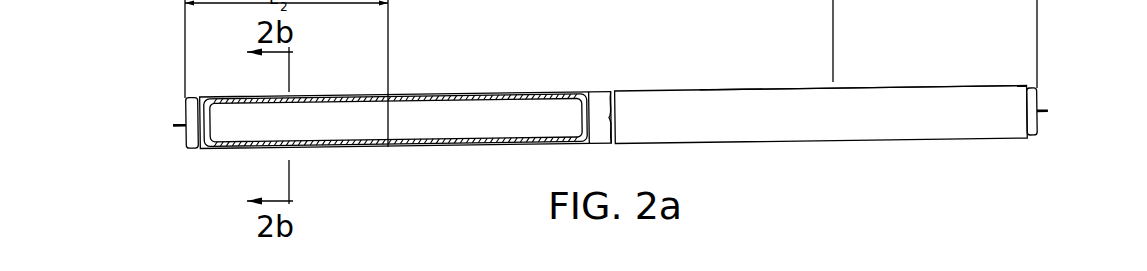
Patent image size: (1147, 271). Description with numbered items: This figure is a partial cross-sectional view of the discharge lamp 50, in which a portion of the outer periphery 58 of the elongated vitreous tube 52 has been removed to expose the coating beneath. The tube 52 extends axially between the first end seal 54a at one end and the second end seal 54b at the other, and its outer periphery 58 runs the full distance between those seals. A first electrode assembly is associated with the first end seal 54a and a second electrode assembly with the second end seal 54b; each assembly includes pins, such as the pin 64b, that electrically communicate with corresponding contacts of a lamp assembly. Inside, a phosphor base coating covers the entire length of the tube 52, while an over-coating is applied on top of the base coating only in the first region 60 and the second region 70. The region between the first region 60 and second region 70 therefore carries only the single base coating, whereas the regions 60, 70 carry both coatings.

The lamp 50 is at (647, 76).
The elongated vitreous tube 52 is at (712, 108).
The first end seal 54a is at (191, 149).
The second end seal 54b is at (1028, 138).
The outer periphery 58 is at (500, 92).
The first region 60 is at (310, 97).
The pin 64b is at (173, 125).
The second region 70 is at (907, 85).